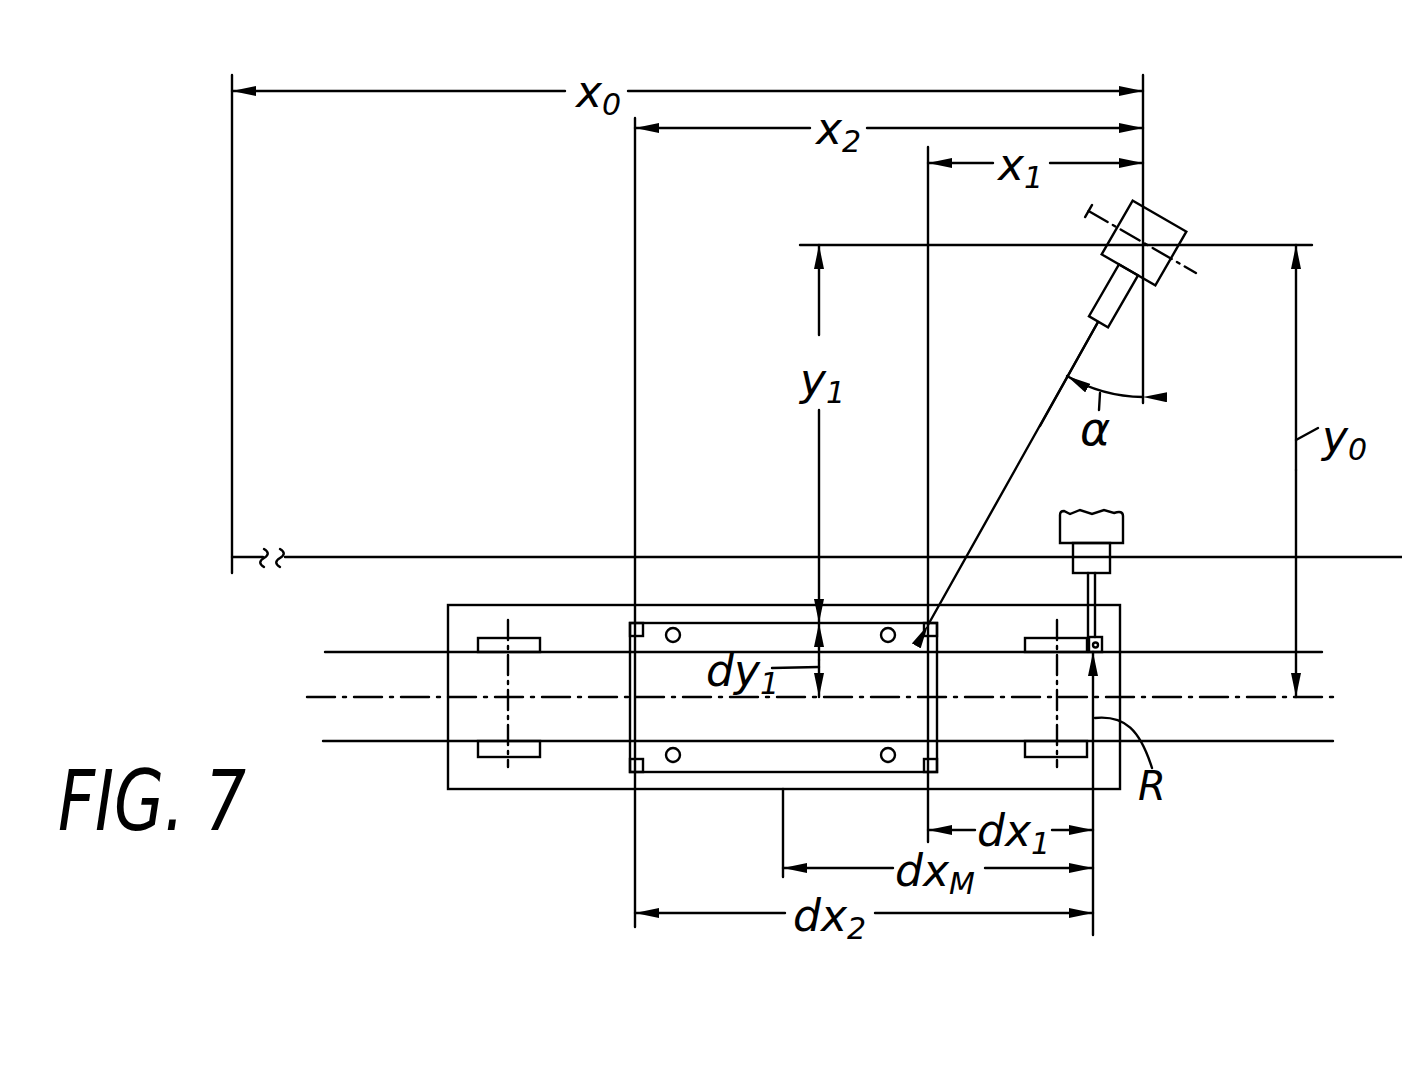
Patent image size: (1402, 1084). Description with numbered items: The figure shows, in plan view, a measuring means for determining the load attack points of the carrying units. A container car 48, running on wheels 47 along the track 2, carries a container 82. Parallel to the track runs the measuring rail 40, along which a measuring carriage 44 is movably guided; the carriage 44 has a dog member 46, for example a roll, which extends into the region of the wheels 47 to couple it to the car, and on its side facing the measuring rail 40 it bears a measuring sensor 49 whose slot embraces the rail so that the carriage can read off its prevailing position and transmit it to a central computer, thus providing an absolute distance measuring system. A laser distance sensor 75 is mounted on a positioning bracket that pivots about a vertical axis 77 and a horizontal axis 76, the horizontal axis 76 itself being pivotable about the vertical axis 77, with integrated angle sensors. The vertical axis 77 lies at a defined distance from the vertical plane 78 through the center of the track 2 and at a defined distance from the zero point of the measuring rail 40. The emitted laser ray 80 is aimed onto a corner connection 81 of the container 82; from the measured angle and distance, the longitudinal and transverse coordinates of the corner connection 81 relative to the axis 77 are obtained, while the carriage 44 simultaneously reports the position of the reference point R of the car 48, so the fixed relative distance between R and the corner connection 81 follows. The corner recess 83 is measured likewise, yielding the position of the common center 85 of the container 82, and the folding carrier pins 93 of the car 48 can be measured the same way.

The track 2 is at (1295, 745).
The measuring rail 40 is at (345, 557).
The measuring carriage 44 is at (1125, 523).
The dog member 46 is at (1105, 643).
The wheels 47 is at (1029, 652).
The container car 48 is at (556, 776).
The measuring sensor 49 is at (1100, 562).
The laser distance sensor 75 is at (1082, 307).
The horizontal axis 76 is at (1087, 214).
The vertical axis 77 is at (1163, 222).
The vertical plane 78 is at (1252, 697).
The laser ray 80 is at (1039, 430).
The corner connection 81 is at (923, 636).
The container 82 is at (768, 634).
The corner recess 83 is at (628, 632).
The common center 85 is at (780, 700).
The carrier pins 93 is at (672, 763).